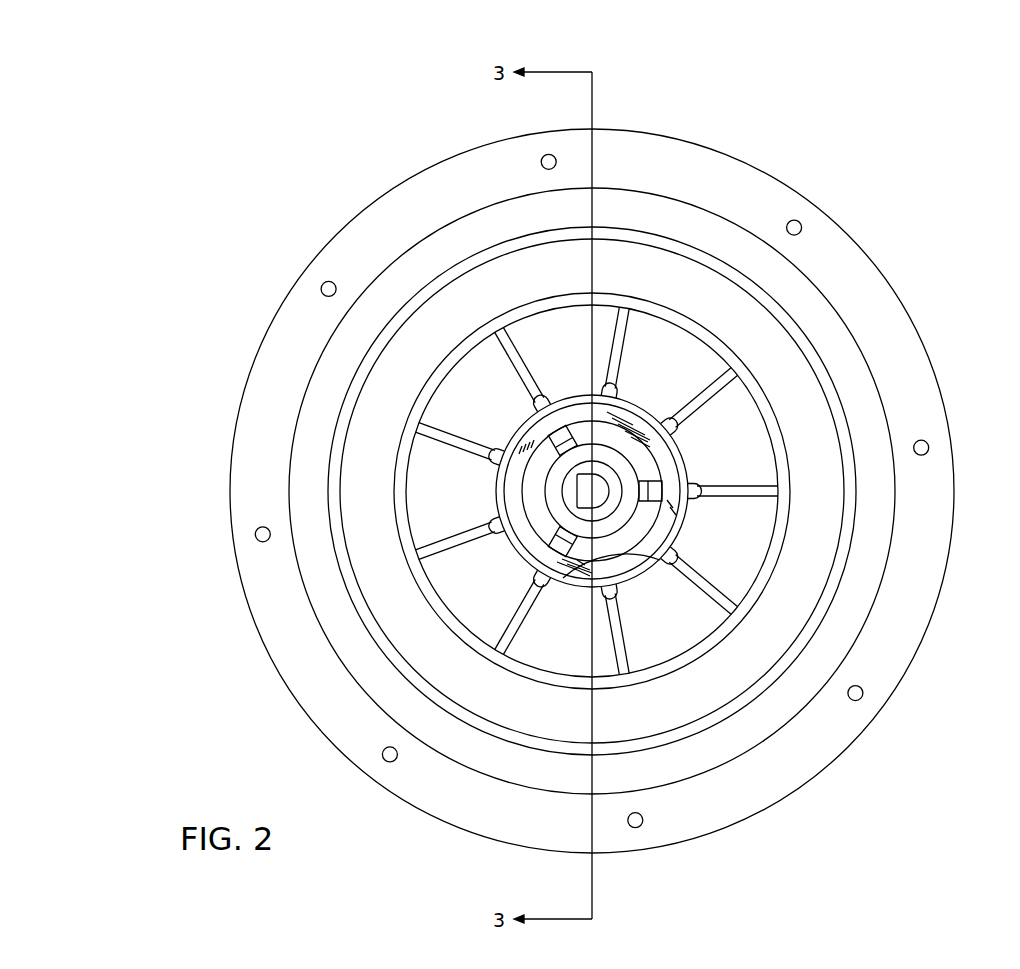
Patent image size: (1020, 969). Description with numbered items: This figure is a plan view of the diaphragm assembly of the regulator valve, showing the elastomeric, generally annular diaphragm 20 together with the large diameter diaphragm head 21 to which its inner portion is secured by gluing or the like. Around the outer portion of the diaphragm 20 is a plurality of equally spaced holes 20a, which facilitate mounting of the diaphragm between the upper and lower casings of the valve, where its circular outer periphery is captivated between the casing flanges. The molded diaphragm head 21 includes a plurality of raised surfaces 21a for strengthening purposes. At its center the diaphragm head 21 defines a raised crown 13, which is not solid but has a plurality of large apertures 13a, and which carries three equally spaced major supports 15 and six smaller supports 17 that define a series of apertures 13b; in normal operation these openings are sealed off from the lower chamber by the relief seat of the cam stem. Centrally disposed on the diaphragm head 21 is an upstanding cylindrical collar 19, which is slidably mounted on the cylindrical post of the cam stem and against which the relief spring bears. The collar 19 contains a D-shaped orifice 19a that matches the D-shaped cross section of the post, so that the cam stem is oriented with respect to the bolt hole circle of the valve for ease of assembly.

The raised crown 13 is at (504, 439).
The large apertures 13a is at (630, 447).
The apertures 13b is at (690, 467).
The major supports 15 is at (545, 445).
The smaller supports 17 is at (672, 429).
The cylindrical collar 19 is at (632, 465).
The D-shaped orifice 19a is at (600, 505).
The diaphragm 20 is at (406, 175).
The holes 20a is at (806, 216).
The diaphragm head 21 is at (652, 236).
The raised surfaces 21a is at (748, 287).